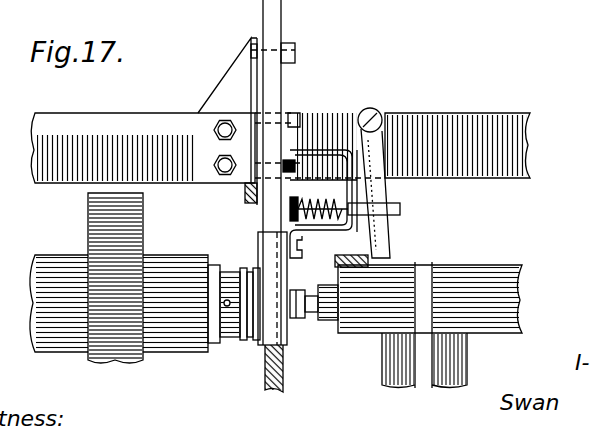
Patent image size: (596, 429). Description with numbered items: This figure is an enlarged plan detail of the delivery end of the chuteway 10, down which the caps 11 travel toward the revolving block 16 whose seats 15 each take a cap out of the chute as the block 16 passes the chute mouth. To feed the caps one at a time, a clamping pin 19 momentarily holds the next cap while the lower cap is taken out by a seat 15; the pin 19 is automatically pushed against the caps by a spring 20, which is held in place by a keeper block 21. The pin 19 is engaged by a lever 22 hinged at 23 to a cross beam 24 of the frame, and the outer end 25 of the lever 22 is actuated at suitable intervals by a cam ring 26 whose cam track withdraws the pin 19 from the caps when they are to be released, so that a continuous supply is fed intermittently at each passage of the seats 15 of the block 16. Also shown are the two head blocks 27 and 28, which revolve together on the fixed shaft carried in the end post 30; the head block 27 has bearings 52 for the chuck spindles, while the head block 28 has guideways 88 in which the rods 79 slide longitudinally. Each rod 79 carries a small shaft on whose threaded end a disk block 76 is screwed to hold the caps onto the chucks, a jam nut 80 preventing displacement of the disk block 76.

The chuteway 10 is at (272, 23).
The caps 11 is at (263, 267).
The seats 15 is at (277, 327).
The block 16 is at (276, 390).
The clamping pin 19 is at (400, 209).
The spring 20 is at (304, 214).
The keeper block 21 is at (330, 150).
The lever 22 is at (385, 188).
The hinge 23 is at (382, 114).
The cross beam 24 is at (481, 122).
The outer end of lever 25 is at (392, 254).
The cam ring 26 is at (360, 257).
The head block 27 is at (119, 303).
The head block 28 is at (423, 365).
The end post 30 is at (110, 230).
The bearings 52 is at (165, 335).
The disk block 76 is at (295, 318).
The rod 79 is at (328, 320).
The jam nut 80 is at (312, 312).
The guideways 88 is at (480, 295).